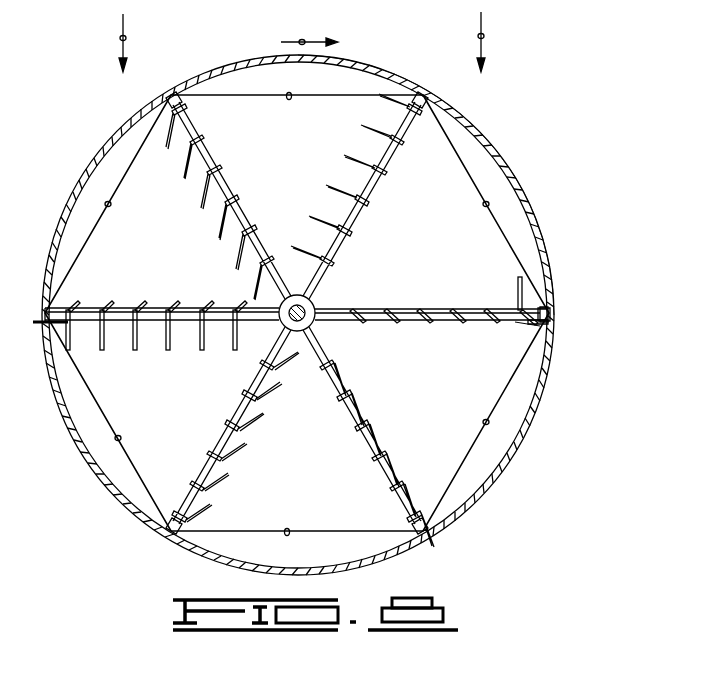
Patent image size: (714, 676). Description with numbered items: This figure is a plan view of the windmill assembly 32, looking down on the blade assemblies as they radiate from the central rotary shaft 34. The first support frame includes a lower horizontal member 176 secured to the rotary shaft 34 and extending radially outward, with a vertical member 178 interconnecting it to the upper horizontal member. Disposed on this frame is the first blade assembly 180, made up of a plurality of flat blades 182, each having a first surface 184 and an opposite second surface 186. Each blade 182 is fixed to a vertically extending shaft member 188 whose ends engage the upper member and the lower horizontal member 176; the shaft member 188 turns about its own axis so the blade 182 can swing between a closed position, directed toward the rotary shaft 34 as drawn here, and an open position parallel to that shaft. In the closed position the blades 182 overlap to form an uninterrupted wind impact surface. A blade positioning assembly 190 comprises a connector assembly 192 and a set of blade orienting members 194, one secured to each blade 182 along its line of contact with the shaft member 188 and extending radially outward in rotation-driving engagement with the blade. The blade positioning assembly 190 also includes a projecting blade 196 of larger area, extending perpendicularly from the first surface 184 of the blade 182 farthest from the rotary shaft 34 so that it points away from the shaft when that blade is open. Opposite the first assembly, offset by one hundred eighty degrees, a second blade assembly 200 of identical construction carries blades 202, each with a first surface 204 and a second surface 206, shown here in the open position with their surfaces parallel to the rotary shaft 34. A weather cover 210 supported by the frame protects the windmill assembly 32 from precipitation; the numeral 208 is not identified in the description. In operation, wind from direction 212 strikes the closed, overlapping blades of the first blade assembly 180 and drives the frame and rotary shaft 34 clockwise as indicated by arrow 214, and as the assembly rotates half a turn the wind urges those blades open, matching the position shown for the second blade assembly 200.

The windmill assembly 32 is at (501, 132).
The rotary shaft 34 is at (318, 300).
The lower horizontal member 176 is at (332, 318).
The vertical member 178 is at (548, 312).
The first blade assembly 180 is at (515, 329).
The flat blade 182 is at (499, 308).
The first surface 184 is at (466, 307).
The second surface 186 is at (452, 320).
The shaft member 188 is at (405, 323).
The blade positioning assembly 190 is at (535, 333).
The connector assembly 192 is at (487, 323).
The blade orienting member 194 is at (397, 306).
The projecting blade 196 is at (525, 295).
The second blade assembly 200 is at (138, 285).
The blade 202 is at (180, 304).
The first surface 204 is at (102, 350).
The second surface 206 is at (202, 350).
The peripheral bar 208 is at (291, 93).
The weather cover 210 is at (101, 153).
The wind direction 212 is at (126, 38).
The arrow indicating clockwise direction 214 is at (304, 40).